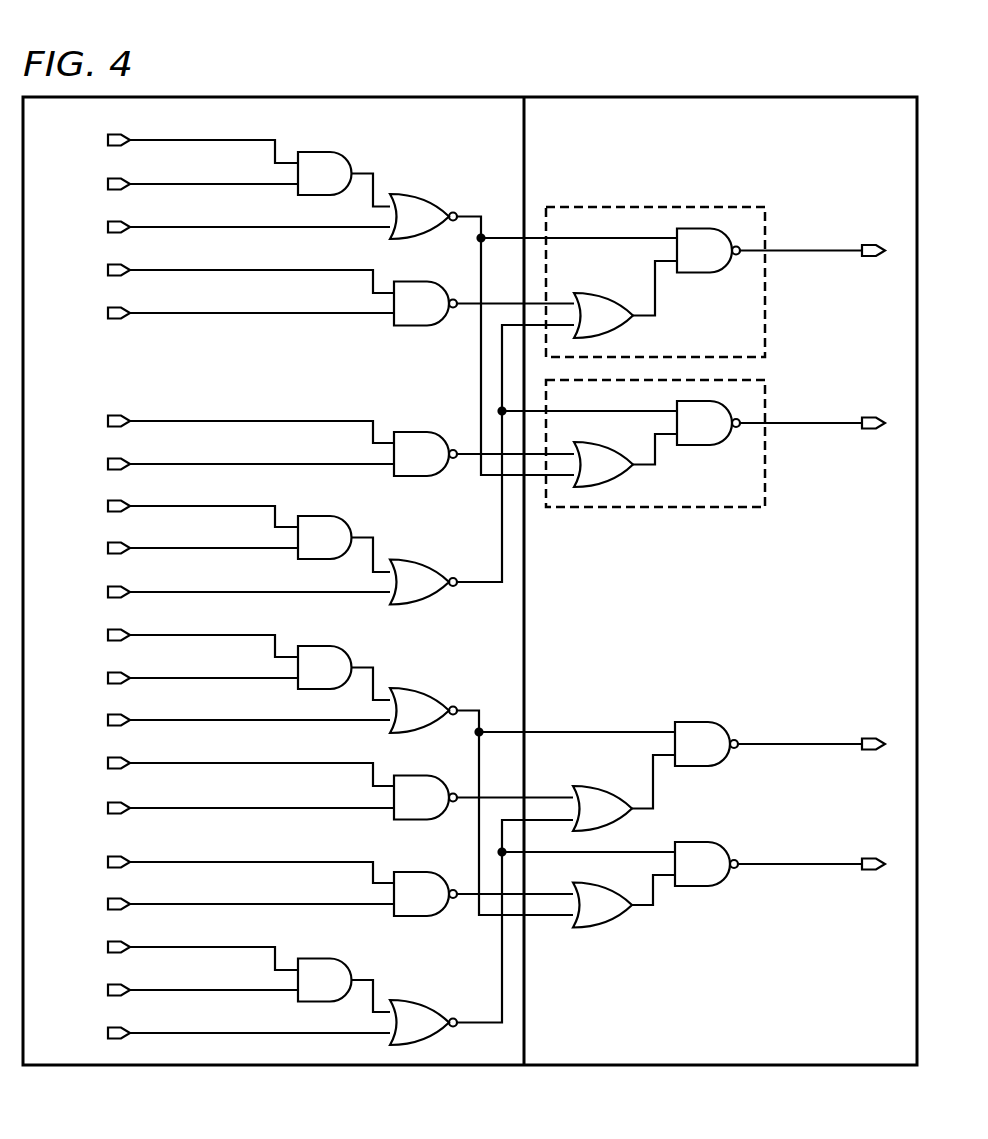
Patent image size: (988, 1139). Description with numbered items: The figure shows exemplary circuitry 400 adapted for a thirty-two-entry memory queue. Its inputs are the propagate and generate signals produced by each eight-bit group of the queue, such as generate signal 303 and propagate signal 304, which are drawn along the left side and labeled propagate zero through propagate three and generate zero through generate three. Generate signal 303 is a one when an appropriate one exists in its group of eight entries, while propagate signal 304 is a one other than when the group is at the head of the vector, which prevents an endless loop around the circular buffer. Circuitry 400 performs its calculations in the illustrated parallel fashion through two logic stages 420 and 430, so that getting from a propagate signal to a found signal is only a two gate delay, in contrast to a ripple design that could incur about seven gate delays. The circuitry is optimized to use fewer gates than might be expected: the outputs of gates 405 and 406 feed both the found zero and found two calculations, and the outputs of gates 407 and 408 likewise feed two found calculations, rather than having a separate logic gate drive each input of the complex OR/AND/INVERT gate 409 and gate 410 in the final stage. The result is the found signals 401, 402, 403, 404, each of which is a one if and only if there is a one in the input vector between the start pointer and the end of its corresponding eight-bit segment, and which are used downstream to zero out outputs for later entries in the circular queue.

The circuitry 400 is at (604, 70).
The logic stage 420 is at (273, 97).
The logic stage 430 is at (722, 98).
The generate signal 303 is at (110, 226).
The propagate signal 304 is at (110, 139).
The found signal 401 is at (868, 245).
The found signal 402 is at (868, 417).
The found signal 403 is at (868, 750).
The found signal 404 is at (868, 870).
The gate 405 is at (406, 193).
The gate 406 is at (406, 560).
The gate 407 is at (406, 688).
The gate 408 is at (406, 1000).
The complex OR/AND/INVERT gate 409 is at (677, 208).
The complex gate 410 is at (678, 510).